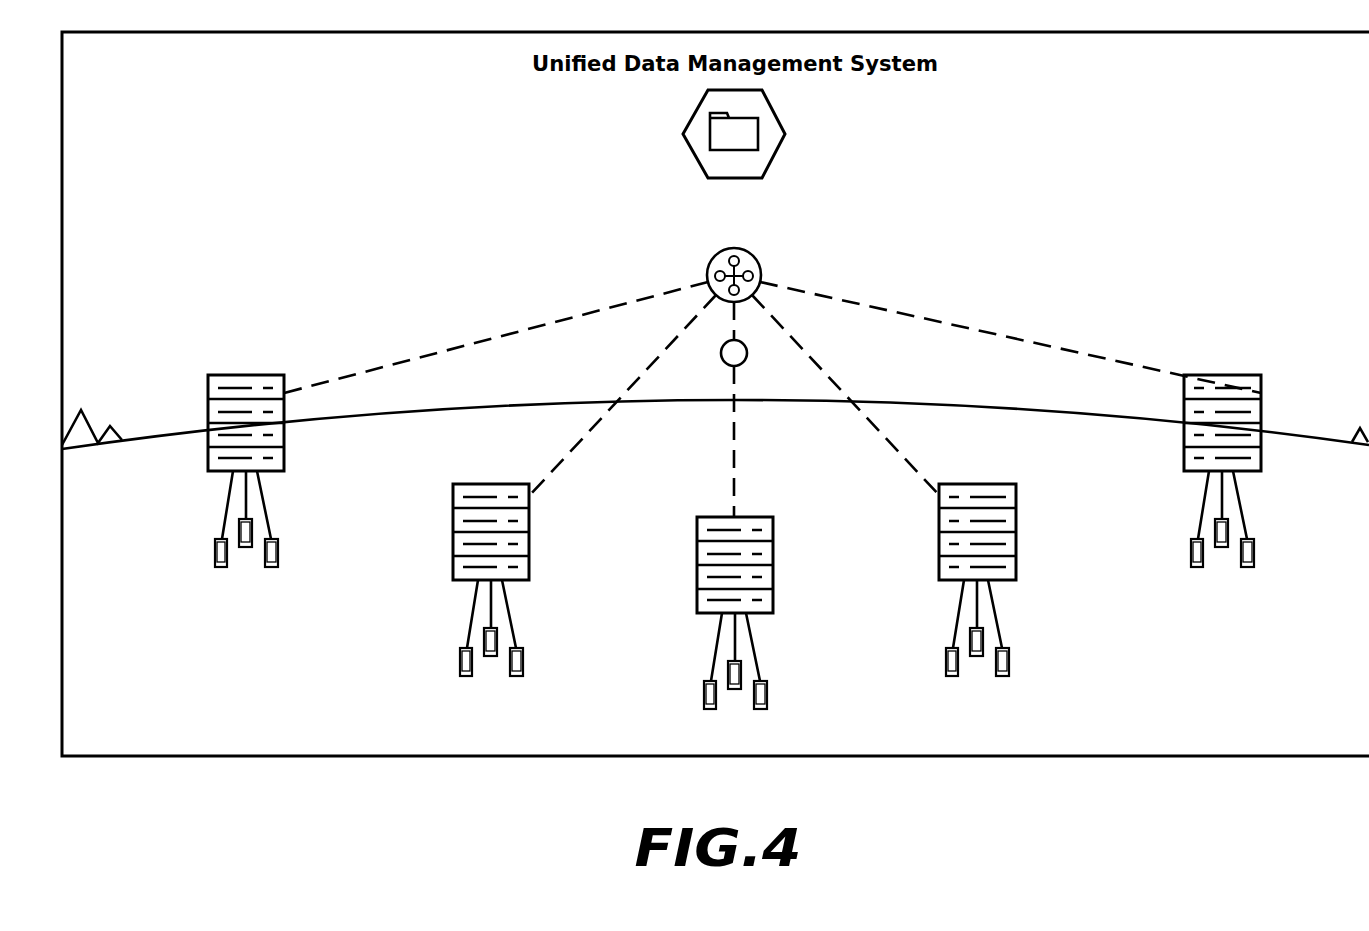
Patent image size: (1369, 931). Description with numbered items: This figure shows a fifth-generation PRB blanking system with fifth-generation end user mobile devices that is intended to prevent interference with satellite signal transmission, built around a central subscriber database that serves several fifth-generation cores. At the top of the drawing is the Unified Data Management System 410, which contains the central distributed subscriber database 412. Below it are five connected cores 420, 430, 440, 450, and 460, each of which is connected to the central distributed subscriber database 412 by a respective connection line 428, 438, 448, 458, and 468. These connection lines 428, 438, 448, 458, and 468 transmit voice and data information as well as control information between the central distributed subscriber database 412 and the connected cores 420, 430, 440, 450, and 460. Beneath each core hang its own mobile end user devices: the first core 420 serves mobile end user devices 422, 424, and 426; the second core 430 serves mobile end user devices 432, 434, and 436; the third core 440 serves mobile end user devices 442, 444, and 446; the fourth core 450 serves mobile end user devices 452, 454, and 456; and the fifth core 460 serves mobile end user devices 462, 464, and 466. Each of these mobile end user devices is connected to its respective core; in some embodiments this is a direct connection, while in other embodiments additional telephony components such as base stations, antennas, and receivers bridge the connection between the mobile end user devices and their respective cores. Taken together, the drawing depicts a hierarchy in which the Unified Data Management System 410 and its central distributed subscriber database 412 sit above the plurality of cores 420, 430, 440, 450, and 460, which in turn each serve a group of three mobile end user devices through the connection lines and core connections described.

The Unified Data Management System 410 is at (773, 107).
The central distributed subscriber database 412 is at (752, 140).
The 5G Core 420 is at (208, 392).
The mobile end user device 422 is at (215, 550).
The mobile end user device 424 is at (246, 547).
The mobile end user device 426 is at (278, 558).
The connection line 428 is at (621, 300).
The 5G Core 430 is at (453, 501).
The mobile end user device 432 is at (460, 659).
The mobile end user device 434 is at (491, 656).
The mobile end user device 436 is at (523, 667).
The connection line 438 is at (650, 365).
The 5G Core 440 is at (697, 534).
The mobile end user device 442 is at (704, 692).
The mobile end user device 444 is at (735, 689).
The mobile end user device 446 is at (767, 700).
The connection line 448 is at (738, 394).
The 5G Core 450 is at (1016, 501).
The mobile end user device 452 is at (946, 659).
The mobile end user device 454 is at (977, 656).
The mobile end user device 456 is at (1009, 667).
The connection line 458 is at (817, 363).
The 5G Core 460 is at (1261, 392).
The mobile end user device 462 is at (1191, 550).
The mobile end user device 464 is at (1222, 547).
The mobile end user device 466 is at (1254, 558).
The connection line 468 is at (849, 301).